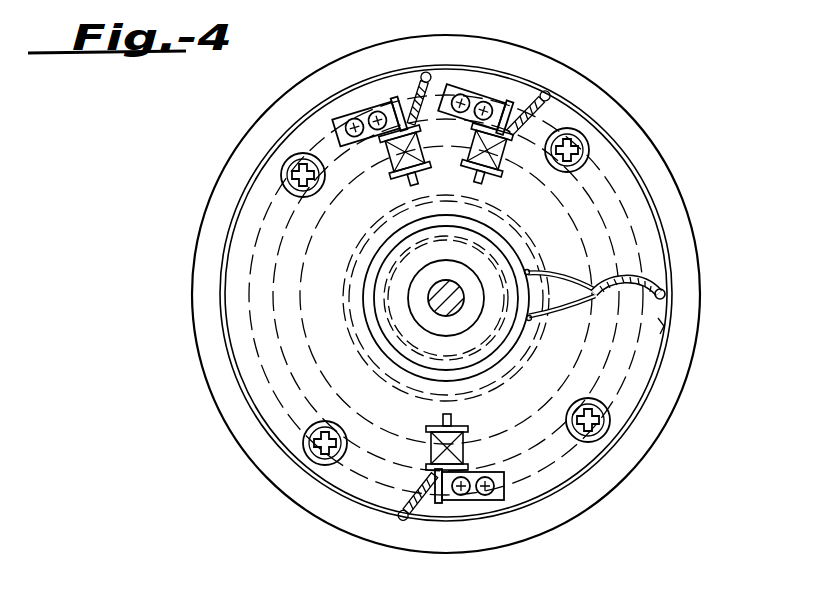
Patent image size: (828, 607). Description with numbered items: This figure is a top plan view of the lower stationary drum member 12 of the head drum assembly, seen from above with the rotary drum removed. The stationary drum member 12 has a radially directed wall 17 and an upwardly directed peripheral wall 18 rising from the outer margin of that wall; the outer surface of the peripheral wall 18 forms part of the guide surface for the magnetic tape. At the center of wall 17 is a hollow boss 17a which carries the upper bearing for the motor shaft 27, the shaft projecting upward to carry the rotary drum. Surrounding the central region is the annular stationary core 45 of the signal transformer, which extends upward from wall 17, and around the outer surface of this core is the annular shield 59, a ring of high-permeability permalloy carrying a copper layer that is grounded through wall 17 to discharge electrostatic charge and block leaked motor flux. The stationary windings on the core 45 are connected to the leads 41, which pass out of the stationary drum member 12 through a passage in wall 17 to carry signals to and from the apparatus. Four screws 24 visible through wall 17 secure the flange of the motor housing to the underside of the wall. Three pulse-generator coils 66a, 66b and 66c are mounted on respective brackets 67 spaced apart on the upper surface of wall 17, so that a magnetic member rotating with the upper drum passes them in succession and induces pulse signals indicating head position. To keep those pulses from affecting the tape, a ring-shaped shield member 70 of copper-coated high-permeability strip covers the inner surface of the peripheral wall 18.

The stationary drum member 12 is at (248, 470).
The radially directed wall 17 is at (242, 388).
The central hollow boss 17a is at (418, 332).
The peripheral wall 18 is at (357, 532).
The screws 24 is at (282, 170).
The motor shaft 27 is at (455, 304).
The leads 41 is at (661, 287).
The stationary core 45 is at (528, 268).
The annular shield 59 is at (375, 345).
The coil 66a is at (524, 422).
The coil 66b is at (398, 152).
The coil 66c is at (502, 174).
The brackets 67 is at (365, 108).
The shield member 70 is at (662, 326).